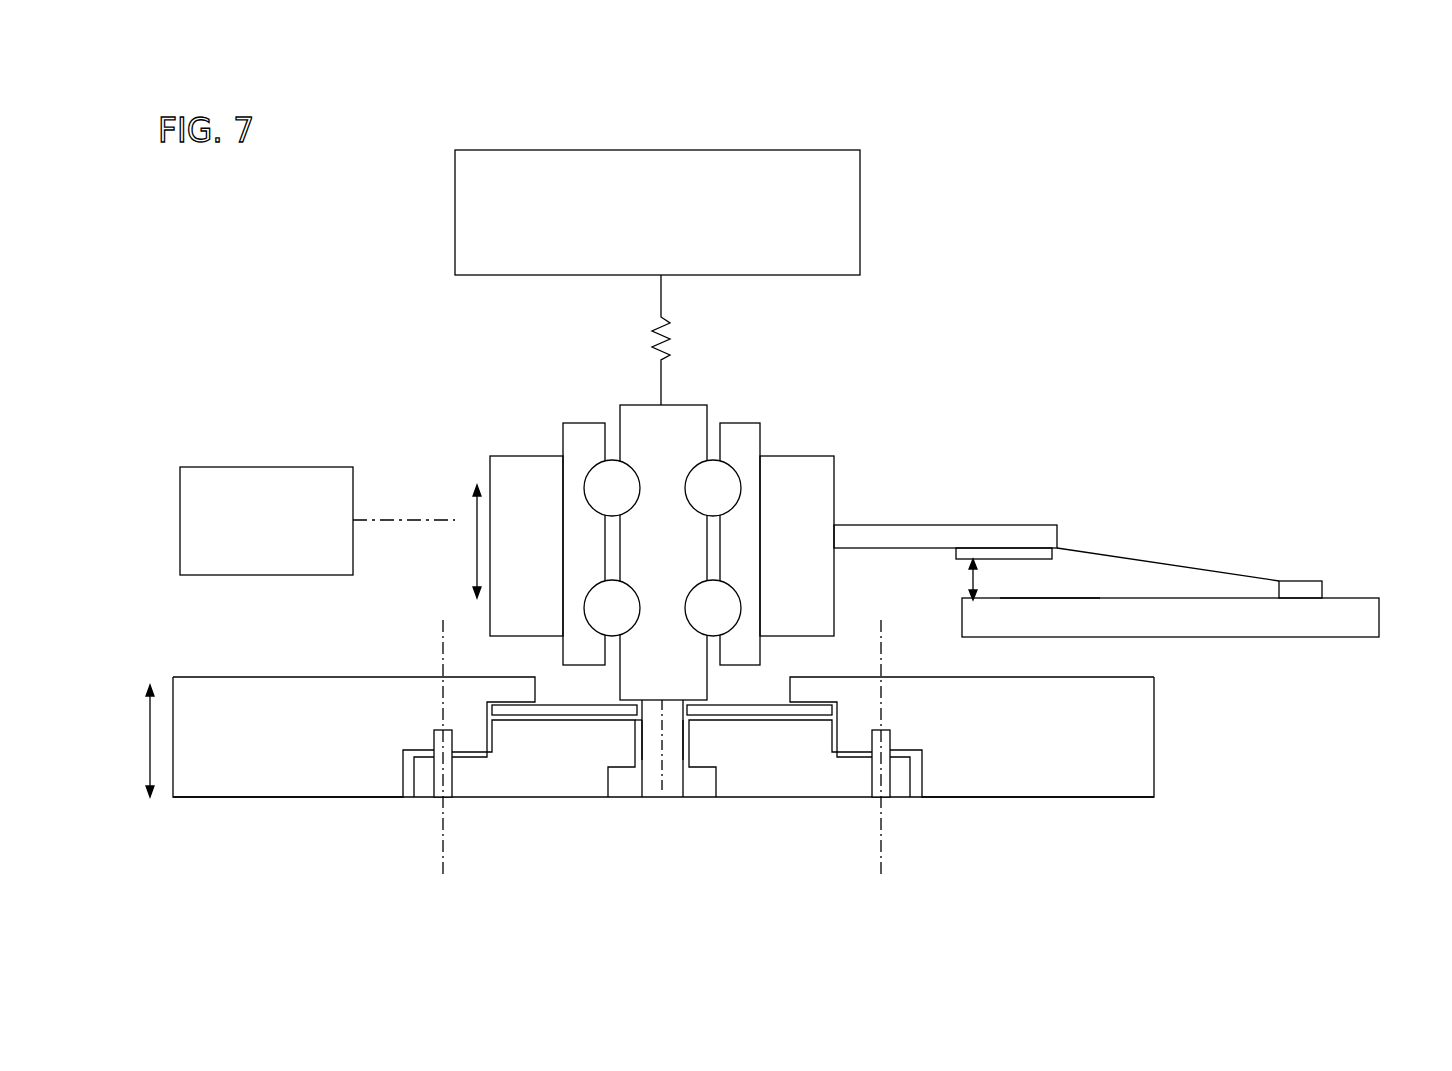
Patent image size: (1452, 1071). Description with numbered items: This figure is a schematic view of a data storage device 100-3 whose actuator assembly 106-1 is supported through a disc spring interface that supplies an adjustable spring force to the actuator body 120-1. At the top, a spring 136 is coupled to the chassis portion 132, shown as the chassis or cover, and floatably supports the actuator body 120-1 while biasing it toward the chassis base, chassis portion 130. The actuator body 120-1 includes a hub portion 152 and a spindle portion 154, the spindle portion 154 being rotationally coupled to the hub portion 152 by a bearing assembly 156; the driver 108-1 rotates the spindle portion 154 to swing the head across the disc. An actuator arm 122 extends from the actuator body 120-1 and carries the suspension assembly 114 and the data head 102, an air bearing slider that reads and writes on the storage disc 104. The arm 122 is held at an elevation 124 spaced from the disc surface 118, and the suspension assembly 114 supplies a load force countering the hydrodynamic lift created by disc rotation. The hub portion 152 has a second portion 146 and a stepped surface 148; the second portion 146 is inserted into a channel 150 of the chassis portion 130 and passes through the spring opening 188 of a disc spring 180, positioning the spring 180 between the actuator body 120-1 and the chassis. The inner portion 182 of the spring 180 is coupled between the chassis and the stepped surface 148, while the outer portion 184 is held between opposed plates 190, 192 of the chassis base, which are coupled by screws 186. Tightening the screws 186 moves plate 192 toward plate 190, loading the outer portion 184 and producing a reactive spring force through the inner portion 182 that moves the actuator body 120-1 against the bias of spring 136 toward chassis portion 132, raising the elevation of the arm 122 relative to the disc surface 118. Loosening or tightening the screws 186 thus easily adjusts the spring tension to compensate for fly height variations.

The chassis portion 132 is at (705, 150).
The spring 136 is at (672, 318).
The driver 108-1 is at (222, 467).
The actuator body 120-1 is at (798, 456).
The bearing assembly 156 is at (585, 423).
The spindle portion 154 is at (740, 423).
The hub portion 152 is at (682, 405).
The spring opening 188 is at (685, 710).
The actuator arm 122 is at (915, 525).
The suspension assembly 114 is at (1120, 556).
The data head 102 is at (1303, 581).
The storage disc 104 is at (1365, 598).
The disc surface 118 is at (1043, 600).
The elevation 124 is at (968, 577).
The chassis portion 130 is at (1155, 733).
The plate 192 is at (537, 775).
The plate 190 is at (525, 677).
The outer portion 184 is at (497, 707).
The disc spring 180 is at (770, 706).
The inner portion 182 is at (708, 707).
The screws 186 is at (440, 793).
The stepped surface 148 is at (632, 700).
The second portion 146 is at (653, 737).
The channel 150 is at (685, 750).
The actuator assembly 106-1 is at (932, 342).
The data storage device 100-3 is at (1072, 298).